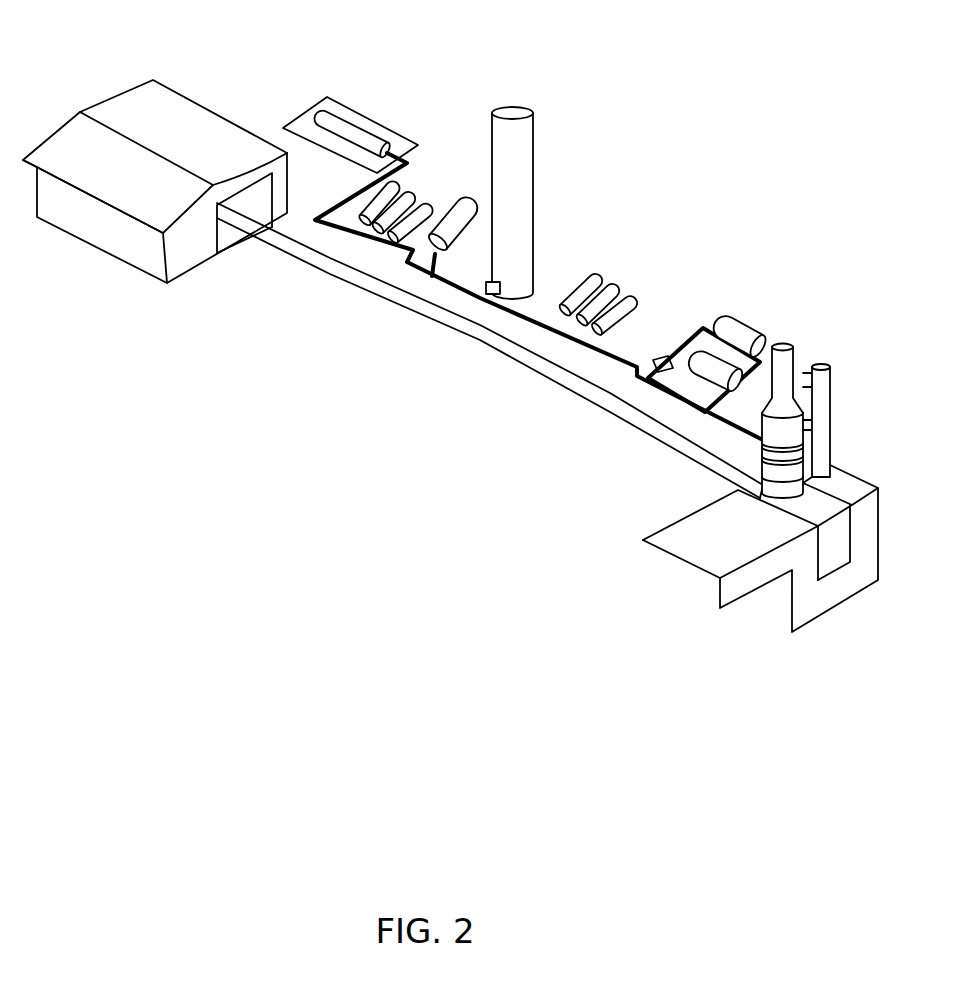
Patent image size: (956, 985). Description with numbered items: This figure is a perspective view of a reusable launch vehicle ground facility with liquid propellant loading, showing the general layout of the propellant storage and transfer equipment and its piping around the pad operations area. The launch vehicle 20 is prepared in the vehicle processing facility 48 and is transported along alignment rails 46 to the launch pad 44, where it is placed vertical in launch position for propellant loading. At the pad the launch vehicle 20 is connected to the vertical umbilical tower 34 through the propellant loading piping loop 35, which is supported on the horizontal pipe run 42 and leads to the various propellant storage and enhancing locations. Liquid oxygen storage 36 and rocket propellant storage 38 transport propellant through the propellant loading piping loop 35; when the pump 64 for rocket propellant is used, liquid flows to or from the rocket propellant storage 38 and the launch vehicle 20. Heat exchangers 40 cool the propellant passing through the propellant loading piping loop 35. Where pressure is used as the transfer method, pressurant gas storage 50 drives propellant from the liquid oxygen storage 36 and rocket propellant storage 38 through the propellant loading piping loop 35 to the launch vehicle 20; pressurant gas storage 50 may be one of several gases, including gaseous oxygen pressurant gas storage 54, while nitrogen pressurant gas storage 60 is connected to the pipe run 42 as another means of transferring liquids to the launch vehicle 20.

The launch vehicle 20 is at (772, 482).
The umbilical tower 34 is at (827, 420).
The propellant loading piping loop 35 is at (433, 263).
The liquid oxygen (LOX) storage 36 is at (470, 217).
The rocket propellant (RP) storage 38 is at (345, 128).
The heat exchangers 40 is at (738, 332).
The pipe run 42 is at (503, 315).
The launch pad 44 is at (725, 525).
The alignment rails 46 is at (533, 375).
The vehicle processing facility 48 is at (150, 100).
The pressurant gas storage 50 is at (625, 300).
The gaseous oxygen (GOX) pressurant gas storage 54 is at (497, 286).
The nitrogen pressurant gas storage 60 is at (425, 210).
The pump 64 is at (663, 358).